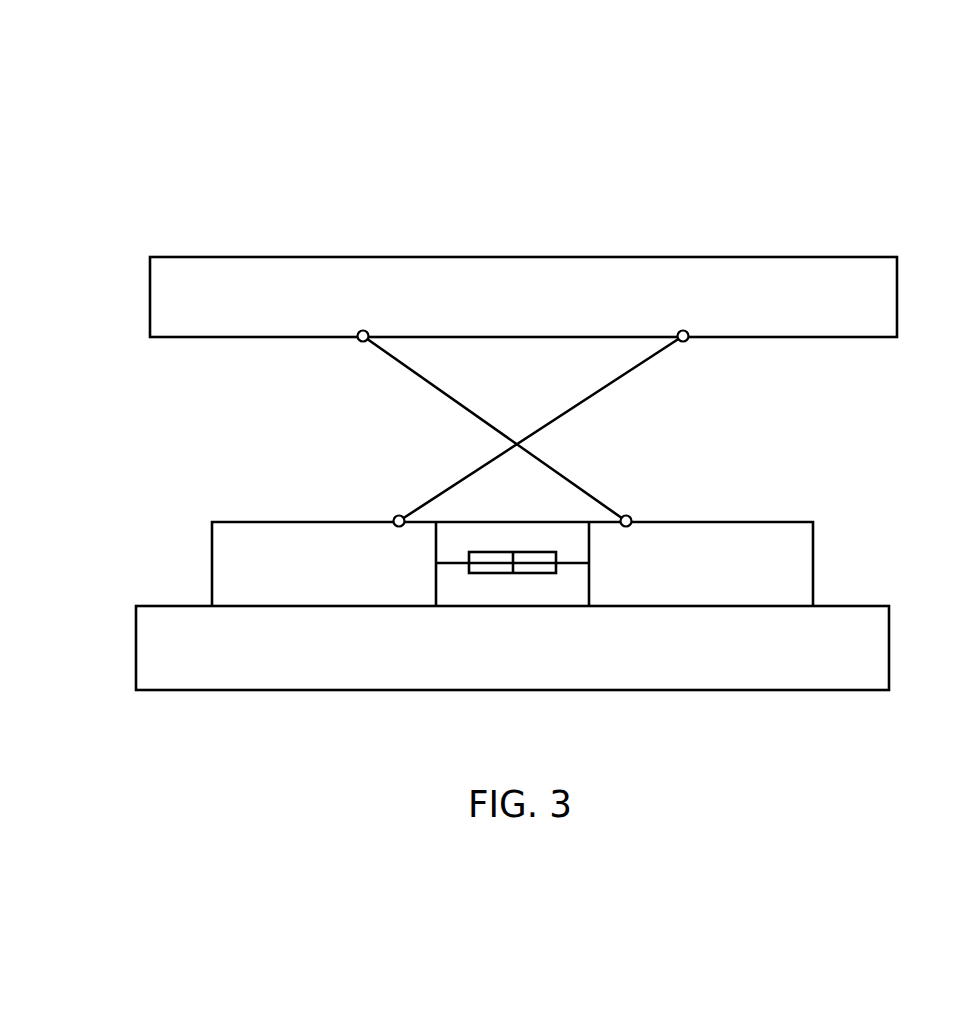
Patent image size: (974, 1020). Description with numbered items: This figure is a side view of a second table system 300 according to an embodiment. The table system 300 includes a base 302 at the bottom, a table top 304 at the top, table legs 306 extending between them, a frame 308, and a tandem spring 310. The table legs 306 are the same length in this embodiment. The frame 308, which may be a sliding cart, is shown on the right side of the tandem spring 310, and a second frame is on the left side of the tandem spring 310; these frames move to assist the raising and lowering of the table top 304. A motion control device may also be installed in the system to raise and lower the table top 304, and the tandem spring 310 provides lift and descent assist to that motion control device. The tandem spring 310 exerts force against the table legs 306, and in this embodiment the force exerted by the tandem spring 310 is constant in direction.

The table system 300 is at (640, 112).
The base 302 is at (867, 615).
The table top 304 is at (786, 265).
The table legs 306 is at (582, 398).
The frame 308 is at (770, 528).
The tandem spring 310 is at (569, 563).